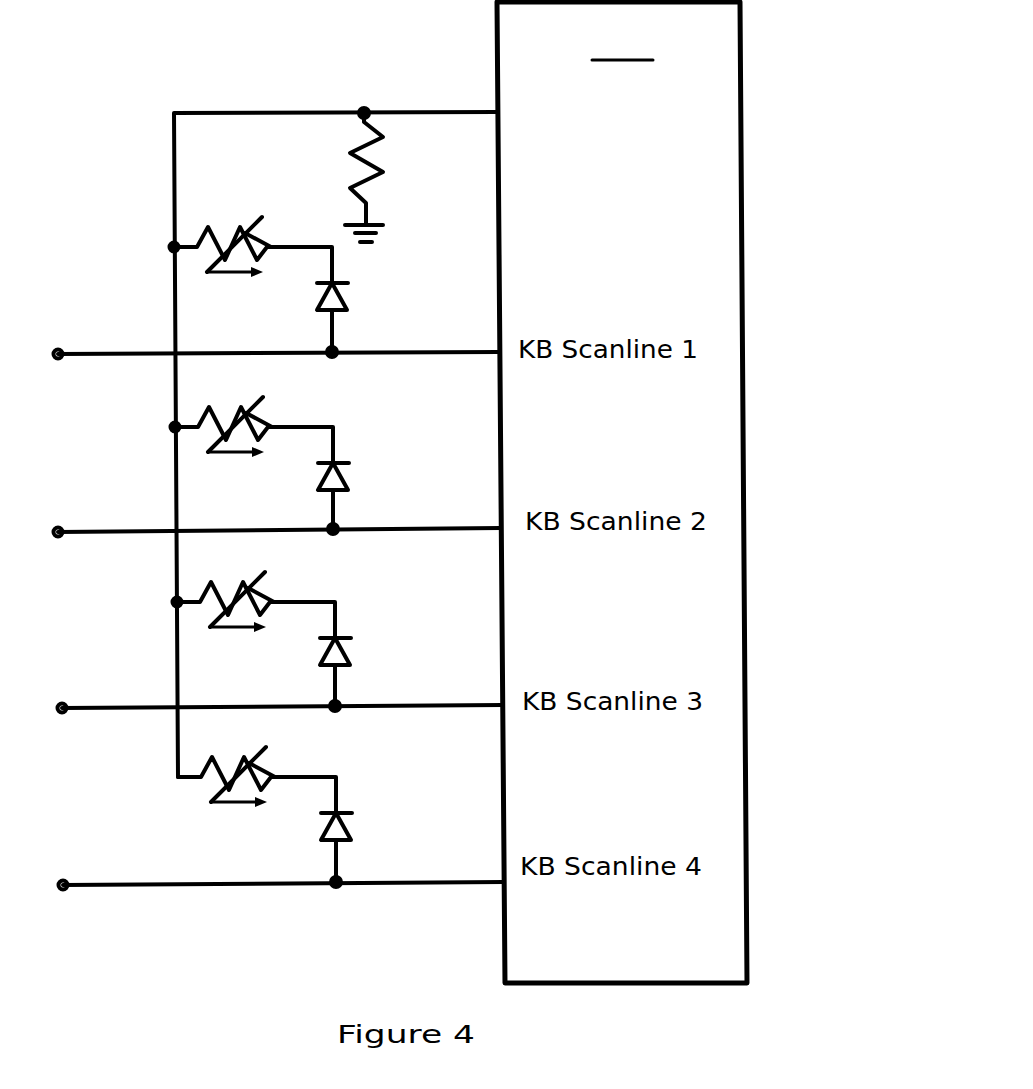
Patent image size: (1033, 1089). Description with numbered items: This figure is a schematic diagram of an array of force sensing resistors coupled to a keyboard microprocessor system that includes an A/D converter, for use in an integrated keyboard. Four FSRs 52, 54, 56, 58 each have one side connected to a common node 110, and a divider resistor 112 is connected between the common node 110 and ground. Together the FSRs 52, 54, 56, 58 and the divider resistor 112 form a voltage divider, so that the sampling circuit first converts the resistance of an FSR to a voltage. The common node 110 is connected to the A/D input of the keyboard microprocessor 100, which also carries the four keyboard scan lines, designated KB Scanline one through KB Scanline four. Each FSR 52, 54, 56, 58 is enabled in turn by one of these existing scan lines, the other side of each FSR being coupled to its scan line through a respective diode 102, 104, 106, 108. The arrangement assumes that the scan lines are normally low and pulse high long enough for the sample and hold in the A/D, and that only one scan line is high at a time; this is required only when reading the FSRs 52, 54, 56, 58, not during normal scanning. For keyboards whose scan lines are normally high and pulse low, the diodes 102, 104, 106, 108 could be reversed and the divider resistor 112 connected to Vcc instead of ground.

The keyboard microprocessor 100 is at (622, 492).
The common node 110 is at (243, 112).
The divider resistor 112 is at (349, 152).
The FSR 52 is at (252, 240).
The FSR 54 is at (257, 415).
The FSR 56 is at (248, 593).
The FSR 58 is at (265, 770).
The diode 102 is at (347, 293).
The diode 104 is at (340, 473).
The diode 106 is at (355, 647).
The diode 108 is at (357, 825).